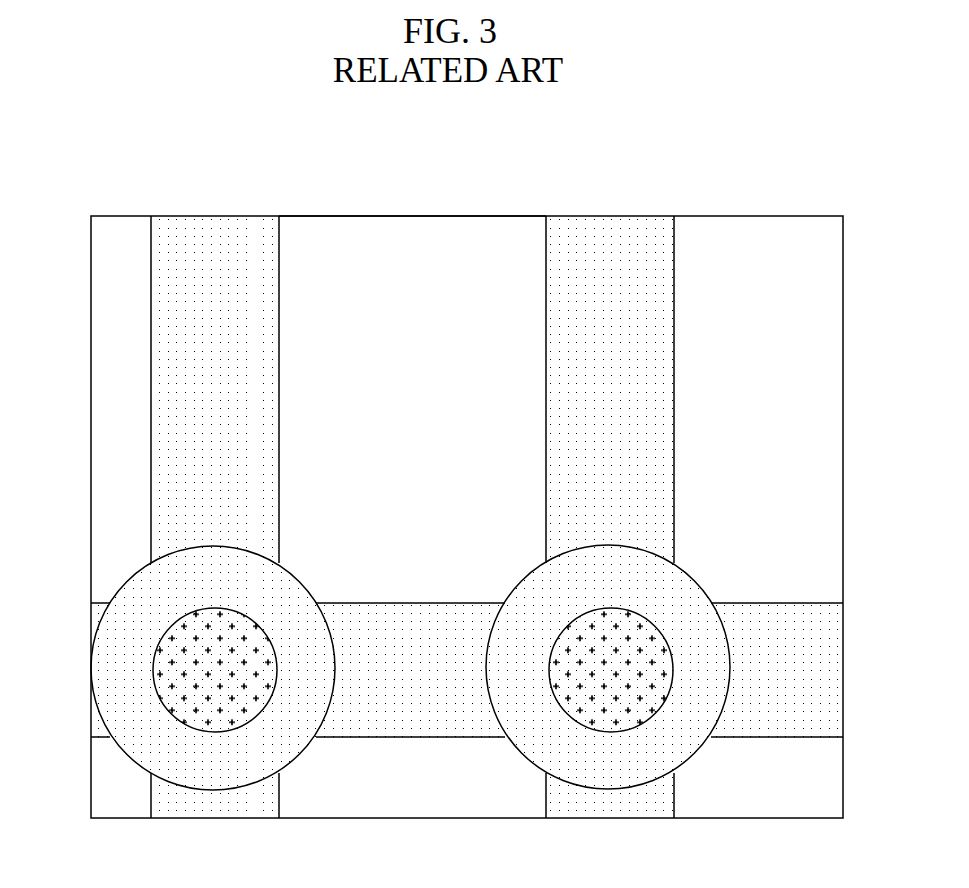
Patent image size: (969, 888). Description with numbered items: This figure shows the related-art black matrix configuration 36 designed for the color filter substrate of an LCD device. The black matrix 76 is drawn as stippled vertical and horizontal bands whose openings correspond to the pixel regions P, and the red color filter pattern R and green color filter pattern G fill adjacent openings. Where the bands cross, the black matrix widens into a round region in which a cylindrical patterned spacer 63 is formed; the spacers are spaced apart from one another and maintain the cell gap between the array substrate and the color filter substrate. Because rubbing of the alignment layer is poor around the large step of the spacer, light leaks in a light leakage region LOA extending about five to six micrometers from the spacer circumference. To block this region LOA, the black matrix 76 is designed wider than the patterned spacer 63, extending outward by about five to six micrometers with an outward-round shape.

The pixel structure of related art 36 is at (441, 488).
The bank / column line 76 is at (187, 358).
The contact hole 63 is at (608, 735).
The light leakage region LOA is at (308, 574).
The pixel region P is at (456, 240).
The red color filter pattern R is at (408, 398).
The green color filter pattern G is at (789, 399).